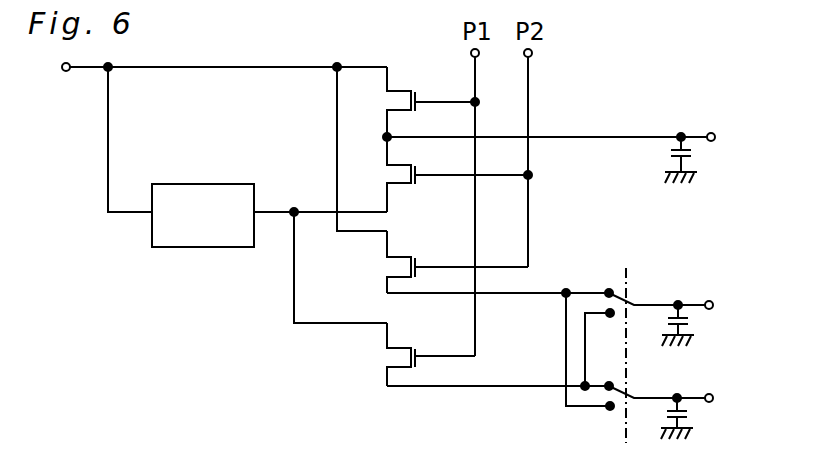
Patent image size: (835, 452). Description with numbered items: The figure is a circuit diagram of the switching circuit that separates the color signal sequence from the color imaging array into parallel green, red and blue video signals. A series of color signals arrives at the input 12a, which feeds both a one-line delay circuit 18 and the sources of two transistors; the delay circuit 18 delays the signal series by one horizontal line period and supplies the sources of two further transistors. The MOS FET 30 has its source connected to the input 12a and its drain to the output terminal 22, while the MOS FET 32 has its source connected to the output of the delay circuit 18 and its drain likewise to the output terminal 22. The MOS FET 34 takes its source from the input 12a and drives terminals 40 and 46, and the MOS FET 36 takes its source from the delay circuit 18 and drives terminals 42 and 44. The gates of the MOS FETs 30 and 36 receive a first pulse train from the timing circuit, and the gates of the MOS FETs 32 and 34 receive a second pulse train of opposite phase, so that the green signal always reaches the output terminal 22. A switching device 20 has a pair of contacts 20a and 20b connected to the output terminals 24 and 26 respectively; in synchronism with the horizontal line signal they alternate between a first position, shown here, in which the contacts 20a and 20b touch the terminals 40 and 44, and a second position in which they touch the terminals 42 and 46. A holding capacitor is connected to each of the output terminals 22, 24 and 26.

The input 12a is at (64, 71).
The 1H delay circuit 18 is at (226, 184).
The MOS FET 30 is at (418, 92).
The MOS FET 32 is at (418, 165).
The MOS FET 34 is at (418, 262).
The MOS FET 36 is at (418, 352).
The output terminal 22 is at (715, 136).
The output terminal 24 is at (713, 303).
The output terminal 26 is at (713, 400).
The switching device 20 is at (640, 358).
The contact 20a is at (634, 304).
The contact 20b is at (634, 397).
The terminal 40 is at (608, 289).
The terminal 42 is at (583, 321).
The terminal 44 is at (600, 378).
The terminal 46 is at (605, 412).